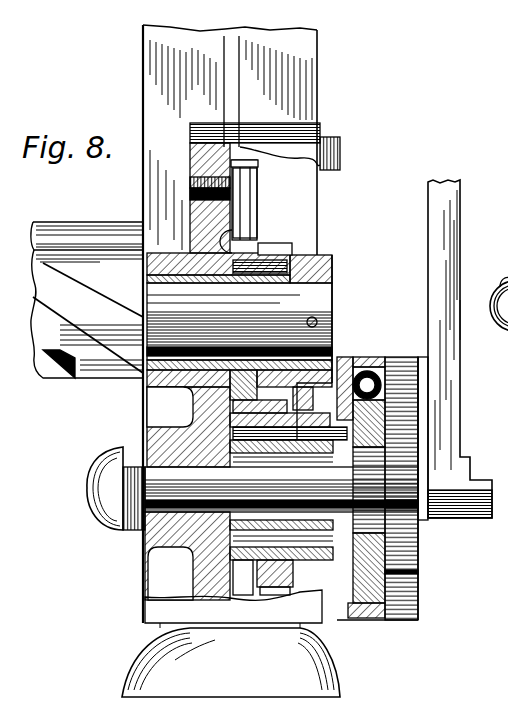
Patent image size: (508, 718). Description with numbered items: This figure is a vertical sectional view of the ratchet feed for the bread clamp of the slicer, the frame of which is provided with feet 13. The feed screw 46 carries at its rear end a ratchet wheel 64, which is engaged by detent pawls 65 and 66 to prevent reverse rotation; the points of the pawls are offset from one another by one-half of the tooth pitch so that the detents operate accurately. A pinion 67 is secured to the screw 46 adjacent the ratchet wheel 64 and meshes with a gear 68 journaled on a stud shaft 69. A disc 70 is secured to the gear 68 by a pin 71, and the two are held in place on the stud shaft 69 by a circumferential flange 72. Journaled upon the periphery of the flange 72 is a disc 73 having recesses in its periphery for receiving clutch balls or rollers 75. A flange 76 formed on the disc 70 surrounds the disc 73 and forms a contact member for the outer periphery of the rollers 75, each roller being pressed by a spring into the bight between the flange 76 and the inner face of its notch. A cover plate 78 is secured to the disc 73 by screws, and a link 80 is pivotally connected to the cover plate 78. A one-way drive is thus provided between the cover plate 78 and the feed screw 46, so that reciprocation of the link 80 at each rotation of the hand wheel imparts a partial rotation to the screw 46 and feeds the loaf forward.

The feet 13 is at (231, 660).
The screw 46 is at (57, 267).
The ratchet wheel 64 is at (258, 246).
The detent pawl 65 is at (253, 221).
The detent pawl 66 is at (258, 220).
The pinion 67 is at (310, 262).
The gear 68 is at (273, 412).
The stud shaft 69 is at (281, 489).
The disc 70 is at (343, 360).
The pin 71 is at (310, 432).
The circumferential flange 72 is at (367, 448).
The disc 73 is at (368, 580).
The clutch balls or rollers 75 is at (383, 378).
The flange 76 is at (365, 360).
The cover plate 78 is at (420, 588).
The link 80 is at (445, 258).